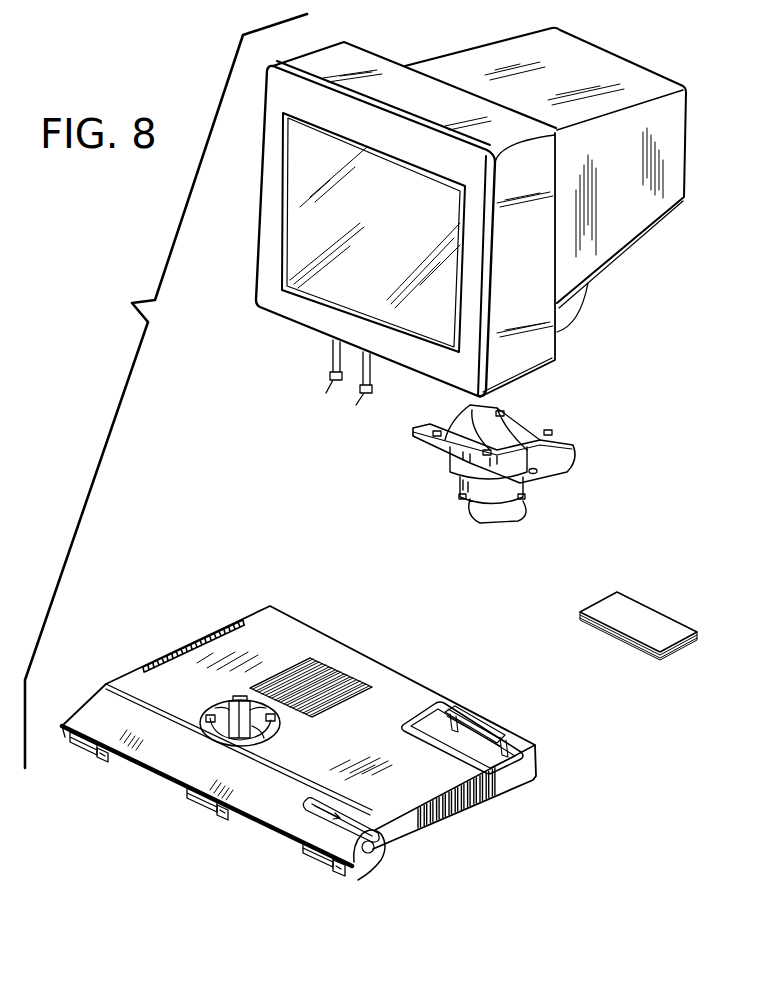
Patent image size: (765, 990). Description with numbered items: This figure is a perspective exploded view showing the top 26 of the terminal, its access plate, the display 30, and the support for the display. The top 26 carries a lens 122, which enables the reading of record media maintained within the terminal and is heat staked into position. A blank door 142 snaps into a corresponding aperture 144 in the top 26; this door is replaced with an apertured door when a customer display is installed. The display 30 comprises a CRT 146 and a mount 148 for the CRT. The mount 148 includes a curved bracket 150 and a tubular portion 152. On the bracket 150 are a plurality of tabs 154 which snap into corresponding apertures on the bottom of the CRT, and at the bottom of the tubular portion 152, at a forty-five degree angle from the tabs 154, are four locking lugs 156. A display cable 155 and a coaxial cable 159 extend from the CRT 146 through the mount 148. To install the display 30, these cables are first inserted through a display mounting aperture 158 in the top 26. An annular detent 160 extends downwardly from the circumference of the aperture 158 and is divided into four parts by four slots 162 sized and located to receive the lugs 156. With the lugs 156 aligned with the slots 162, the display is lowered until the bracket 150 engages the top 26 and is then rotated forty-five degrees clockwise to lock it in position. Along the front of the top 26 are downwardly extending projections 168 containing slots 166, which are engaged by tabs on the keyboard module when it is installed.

The top 26 is at (280, 771).
The display 30 is at (242, 278).
The lens 122 is at (378, 856).
The blank door 142 is at (645, 607).
The aperture 144 is at (447, 710).
The CRT (cathode ray tube) 146 is at (612, 246).
The mount 148 is at (531, 465).
The curved bracket 150 is at (562, 468).
The tubular portion 152 is at (450, 466).
The tabs 154 is at (473, 435).
The display cable 155 is at (360, 384).
The locking lugs 156 is at (505, 518).
The display mounting aperture 158 is at (222, 722).
The coaxial cable 159 is at (328, 362).
The annular detent 160 is at (265, 722).
The slots 162 is at (240, 700).
The slots 166 is at (76, 755).
The downwardly extending projections 168 is at (105, 763).